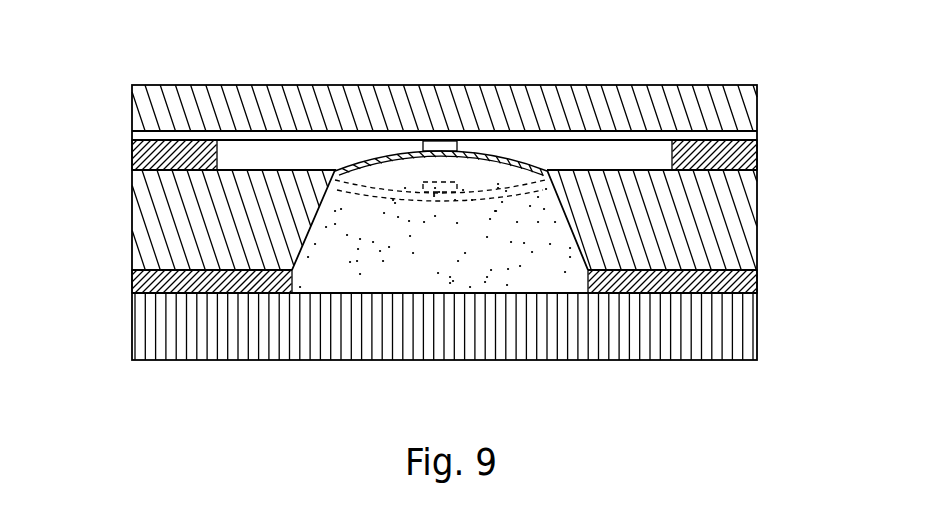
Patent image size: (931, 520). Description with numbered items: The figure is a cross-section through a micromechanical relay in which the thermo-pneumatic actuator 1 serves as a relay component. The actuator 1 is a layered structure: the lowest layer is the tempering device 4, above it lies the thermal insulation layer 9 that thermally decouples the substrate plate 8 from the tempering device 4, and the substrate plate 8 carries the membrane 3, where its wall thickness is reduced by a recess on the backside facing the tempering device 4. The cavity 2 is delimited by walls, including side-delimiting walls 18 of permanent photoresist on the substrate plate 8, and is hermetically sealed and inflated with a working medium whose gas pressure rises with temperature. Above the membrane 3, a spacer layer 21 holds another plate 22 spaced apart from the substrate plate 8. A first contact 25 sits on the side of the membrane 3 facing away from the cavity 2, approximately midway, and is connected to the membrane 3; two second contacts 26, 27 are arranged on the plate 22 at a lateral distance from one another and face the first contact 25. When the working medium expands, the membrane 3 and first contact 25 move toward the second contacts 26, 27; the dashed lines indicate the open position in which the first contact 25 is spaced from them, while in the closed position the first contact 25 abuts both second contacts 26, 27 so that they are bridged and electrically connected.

The thermo-pneumatic actuator 1 is at (614, 378).
The cavity 2 is at (446, 268).
The membrane 3 is at (500, 158).
The tempering device 4 is at (745, 337).
The substrate plate 8 is at (140, 228).
The thermal insulation layer 9 is at (747, 282).
The side-delimiting walls 18 is at (439, 284).
The spacer layer 21 is at (140, 155).
The plate 22 is at (752, 106).
The first contact 25 is at (440, 148).
The second contact 26 is at (349, 140).
The second contact 27 is at (557, 140).